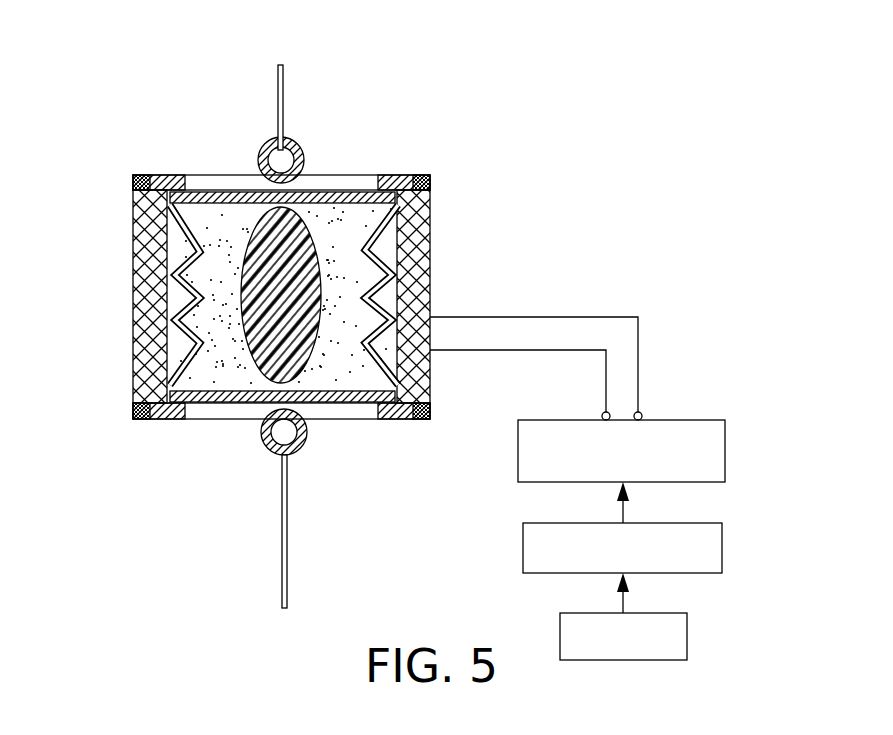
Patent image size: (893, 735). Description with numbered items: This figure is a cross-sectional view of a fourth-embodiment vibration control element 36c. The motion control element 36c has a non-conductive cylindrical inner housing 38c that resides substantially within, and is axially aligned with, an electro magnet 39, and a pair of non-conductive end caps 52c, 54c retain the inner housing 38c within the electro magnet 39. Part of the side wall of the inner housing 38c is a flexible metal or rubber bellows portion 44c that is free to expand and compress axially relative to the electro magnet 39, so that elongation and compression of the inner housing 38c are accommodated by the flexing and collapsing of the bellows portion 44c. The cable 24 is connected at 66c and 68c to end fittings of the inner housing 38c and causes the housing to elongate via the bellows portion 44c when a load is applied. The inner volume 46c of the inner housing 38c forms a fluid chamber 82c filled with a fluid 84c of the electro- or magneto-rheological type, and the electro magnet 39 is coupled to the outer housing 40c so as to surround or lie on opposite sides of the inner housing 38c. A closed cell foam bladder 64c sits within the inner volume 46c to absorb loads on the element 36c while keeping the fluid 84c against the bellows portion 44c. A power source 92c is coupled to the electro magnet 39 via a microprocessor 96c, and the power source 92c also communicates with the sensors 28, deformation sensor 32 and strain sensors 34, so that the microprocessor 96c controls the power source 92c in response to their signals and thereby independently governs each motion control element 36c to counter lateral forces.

The cable 24 is at (283, 83).
The vibration control element 36c is at (345, 320).
The inner housing 38c is at (353, 161).
The electro magnet 39 is at (133, 283).
The outer housing 40c is at (430, 218).
The bellows portion 44c is at (430, 256).
The inner volume 46c is at (357, 280).
The end cap 52c is at (421, 173).
The end cap 54c is at (420, 420).
The closed cell foam bladder 64c is at (307, 353).
The cable connection 66c is at (288, 528).
The cable connection 68c is at (283, 112).
The fluid chamber 82c is at (343, 298).
The fluid 84c is at (430, 367).
The power source 92c is at (715, 432).
The microprocessor 96c is at (713, 530).
The sensors 28 is at (676, 636).
The deformation sensor 32 is at (676, 636).
The strain sensors 34 is at (682, 623).